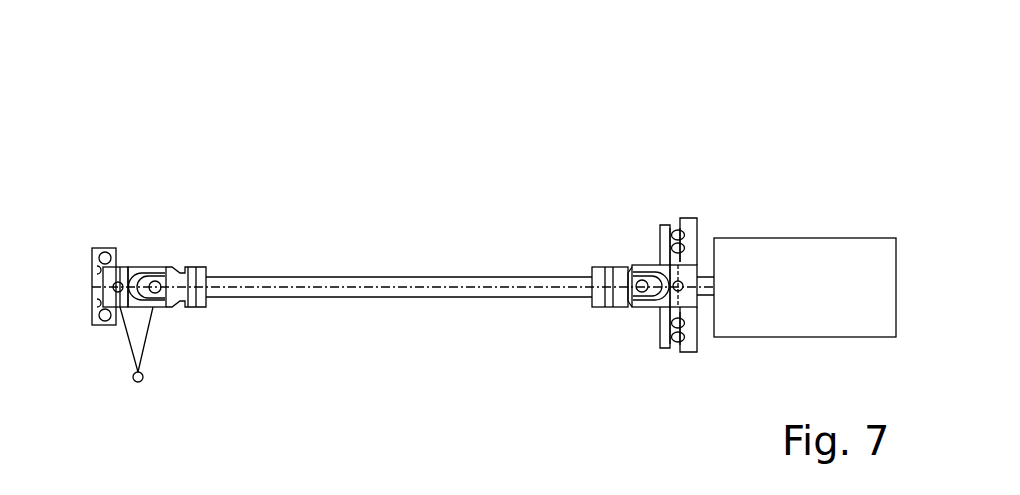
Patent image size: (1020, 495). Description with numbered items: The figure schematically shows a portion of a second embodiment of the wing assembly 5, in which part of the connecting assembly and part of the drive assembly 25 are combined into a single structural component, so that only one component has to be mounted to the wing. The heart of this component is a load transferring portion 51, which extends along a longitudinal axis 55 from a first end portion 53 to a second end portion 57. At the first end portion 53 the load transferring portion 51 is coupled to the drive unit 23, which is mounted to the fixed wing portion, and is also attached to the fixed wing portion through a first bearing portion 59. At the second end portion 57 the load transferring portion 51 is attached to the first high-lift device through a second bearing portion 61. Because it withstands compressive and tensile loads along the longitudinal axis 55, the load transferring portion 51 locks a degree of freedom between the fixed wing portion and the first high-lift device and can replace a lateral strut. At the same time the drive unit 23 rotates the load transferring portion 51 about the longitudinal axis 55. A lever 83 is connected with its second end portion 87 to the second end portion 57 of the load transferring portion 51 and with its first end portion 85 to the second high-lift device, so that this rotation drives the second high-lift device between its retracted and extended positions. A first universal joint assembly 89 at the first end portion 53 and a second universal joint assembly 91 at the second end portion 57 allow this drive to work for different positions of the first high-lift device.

The wing assembly 5 is at (445, 108).
The drive assembly 25 is at (508, 196).
The load transferring portion 51 is at (371, 275).
The longitudinal axis 55 is at (437, 289).
The second end portion 57 is at (117, 265).
The second bearing portion 61 is at (103, 248).
The second universal joint assembly 91 is at (188, 267).
The second end portion of lever 87 is at (148, 313).
The lever 83 is at (146, 345).
The first end portion of lever 85 is at (147, 381).
The first universal joint assembly 89 is at (621, 267).
The first bearing portion 59 is at (678, 229).
The first end portion 53 is at (690, 272).
The drive unit 23 is at (810, 253).